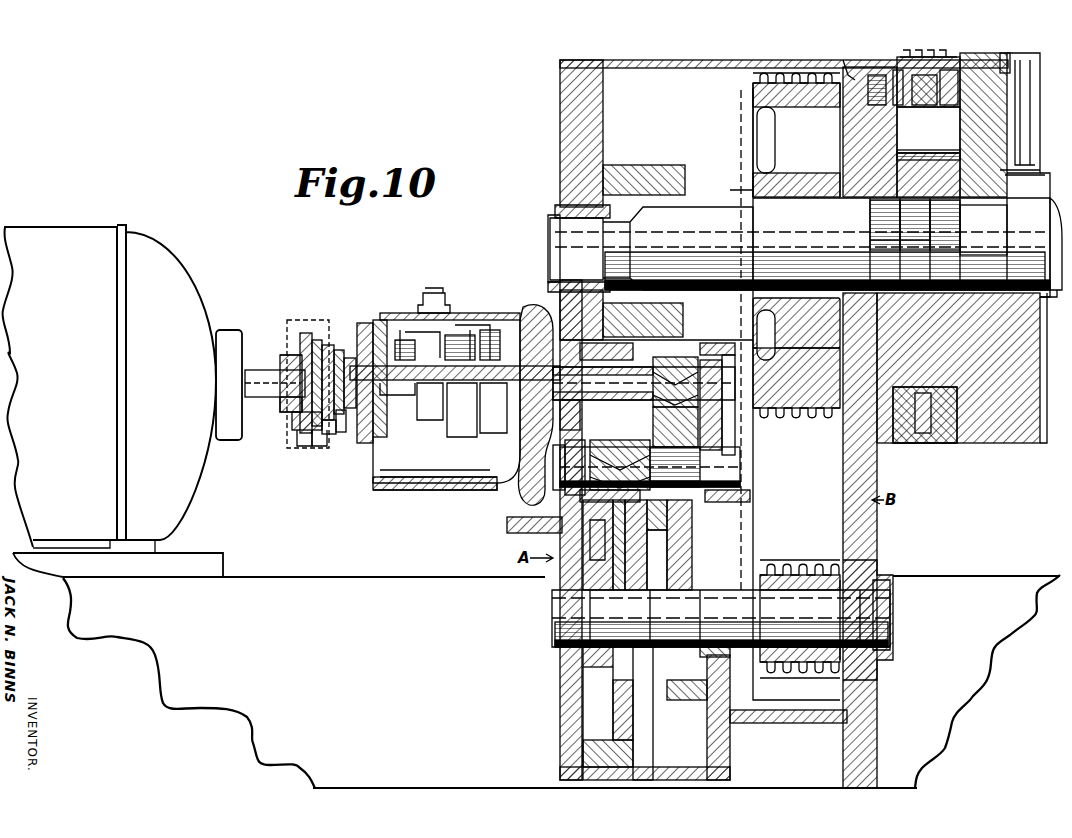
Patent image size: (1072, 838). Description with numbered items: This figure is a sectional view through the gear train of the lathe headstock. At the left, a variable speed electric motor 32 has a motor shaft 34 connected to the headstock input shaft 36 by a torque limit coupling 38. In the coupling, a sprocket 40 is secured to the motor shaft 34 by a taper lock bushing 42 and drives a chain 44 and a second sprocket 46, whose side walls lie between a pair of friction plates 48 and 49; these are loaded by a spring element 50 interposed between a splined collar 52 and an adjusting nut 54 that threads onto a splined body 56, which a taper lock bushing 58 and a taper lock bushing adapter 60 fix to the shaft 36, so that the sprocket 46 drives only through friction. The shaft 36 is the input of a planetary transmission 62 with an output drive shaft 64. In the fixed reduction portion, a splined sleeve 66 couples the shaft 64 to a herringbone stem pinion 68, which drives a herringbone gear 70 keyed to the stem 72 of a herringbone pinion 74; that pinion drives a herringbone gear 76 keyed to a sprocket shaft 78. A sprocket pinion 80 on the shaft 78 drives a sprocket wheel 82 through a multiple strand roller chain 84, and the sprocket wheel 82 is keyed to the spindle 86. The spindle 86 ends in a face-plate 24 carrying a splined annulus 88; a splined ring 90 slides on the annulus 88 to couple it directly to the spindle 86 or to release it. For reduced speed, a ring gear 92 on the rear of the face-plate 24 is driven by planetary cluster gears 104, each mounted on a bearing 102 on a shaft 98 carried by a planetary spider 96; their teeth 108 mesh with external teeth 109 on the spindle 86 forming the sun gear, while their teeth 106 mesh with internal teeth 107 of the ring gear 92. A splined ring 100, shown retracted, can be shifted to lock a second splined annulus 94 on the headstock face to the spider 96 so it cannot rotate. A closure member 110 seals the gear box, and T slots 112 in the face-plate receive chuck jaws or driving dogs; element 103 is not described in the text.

The face-plate 24 is at (1030, 383).
The variable speed electric motor 32 is at (160, 243).
The motor shaft 34 is at (280, 366).
The headstock input shaft 36 is at (333, 434).
The torque limit coupling 38 is at (296, 312).
The sprocket 40 is at (295, 420).
The taper lock bushing 42 is at (280, 405).
The chain 44 is at (300, 446).
The second sprocket 46 is at (318, 446).
The friction plate 48 is at (306, 333).
The friction plate 49 is at (318, 340).
The spring element 50 is at (340, 350).
The splined collar 52 is at (330, 345).
The adjusting nut 54 is at (350, 358).
The splined body 56 is at (341, 432).
The taper lock bushing 58 is at (300, 380).
The taper lock bushing adapter 60 is at (285, 356).
The planetary transmission 62 is at (449, 496).
The output drive shaft 64 is at (605, 400).
The splined sleeve 66 is at (618, 447).
The herringbone stem pinion 68 is at (668, 358).
The herringbone gear 70 is at (670, 522).
The stem 72 is at (700, 522).
The herringbone pinion 74 is at (653, 415).
The herringbone gear 76 is at (560, 538).
The sprocket shaft 78 is at (688, 587).
The sprocket pinion 80 is at (815, 560).
The sprocket wheel 82 is at (795, 420).
The multiple strand roller chain 84 is at (750, 552).
The spindle 86 is at (680, 218).
The splined annulus 88 is at (1010, 172).
The splined ring 90 is at (983, 230).
The ring gear 92 is at (930, 75).
The second splined annulus 94 is at (880, 75).
The planetary spider 96 is at (920, 448).
The shaft 98 is at (830, 138).
The splined ring 100 is at (862, 67).
The bearing 102 is at (948, 165).
The ring 103 is at (950, 70).
The planetary cluster gear 104 is at (870, 215).
The gear teeth 106 is at (903, 225).
The internal teeth 107 is at (900, 70).
The gear teeth 108 is at (932, 225).
The external teeth 109 is at (870, 240).
The closure member 110 is at (1047, 300).
The T slots 112 is at (1033, 116).